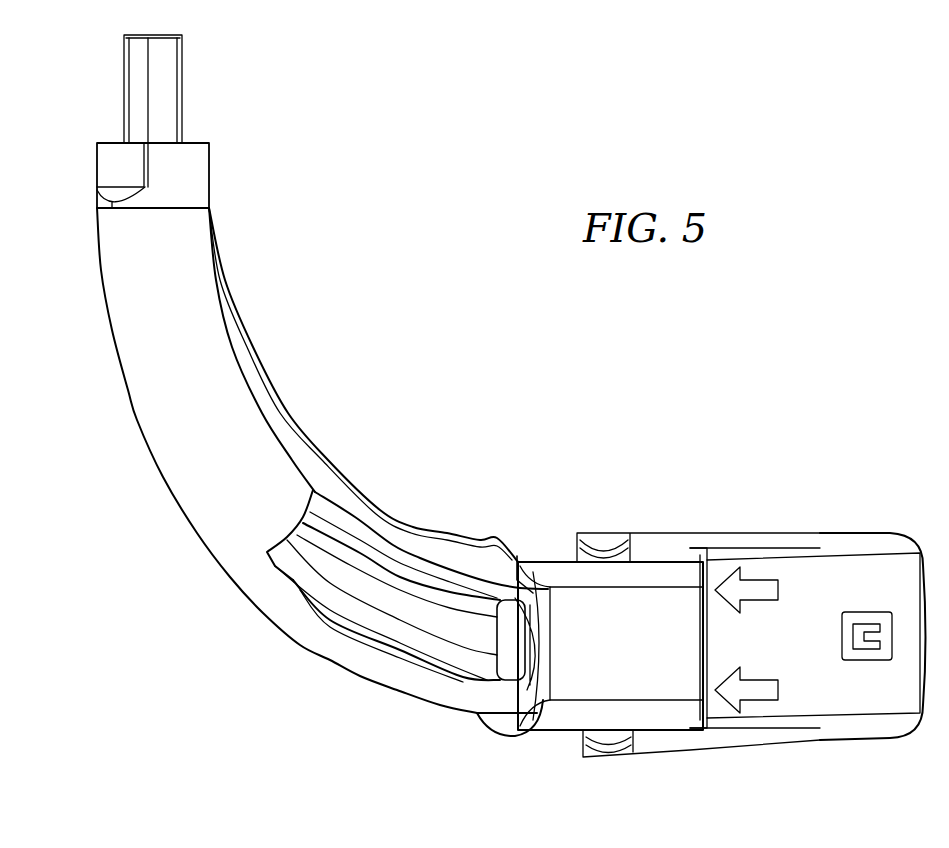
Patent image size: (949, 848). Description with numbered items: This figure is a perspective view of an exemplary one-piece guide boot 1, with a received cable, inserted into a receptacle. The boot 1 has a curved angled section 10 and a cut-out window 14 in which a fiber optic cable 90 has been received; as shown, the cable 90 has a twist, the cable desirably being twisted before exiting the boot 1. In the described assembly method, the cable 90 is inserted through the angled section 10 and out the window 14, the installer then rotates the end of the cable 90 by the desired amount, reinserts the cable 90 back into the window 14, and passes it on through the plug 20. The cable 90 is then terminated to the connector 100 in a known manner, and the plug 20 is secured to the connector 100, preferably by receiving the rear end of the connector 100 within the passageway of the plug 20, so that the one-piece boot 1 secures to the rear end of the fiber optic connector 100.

The one-piece boot 1 is at (305, 392).
The angled section 10 is at (349, 657).
The window 14 is at (293, 581).
The plug 20 is at (552, 570).
The cable 90 is at (386, 603).
The connector 100 is at (838, 573).